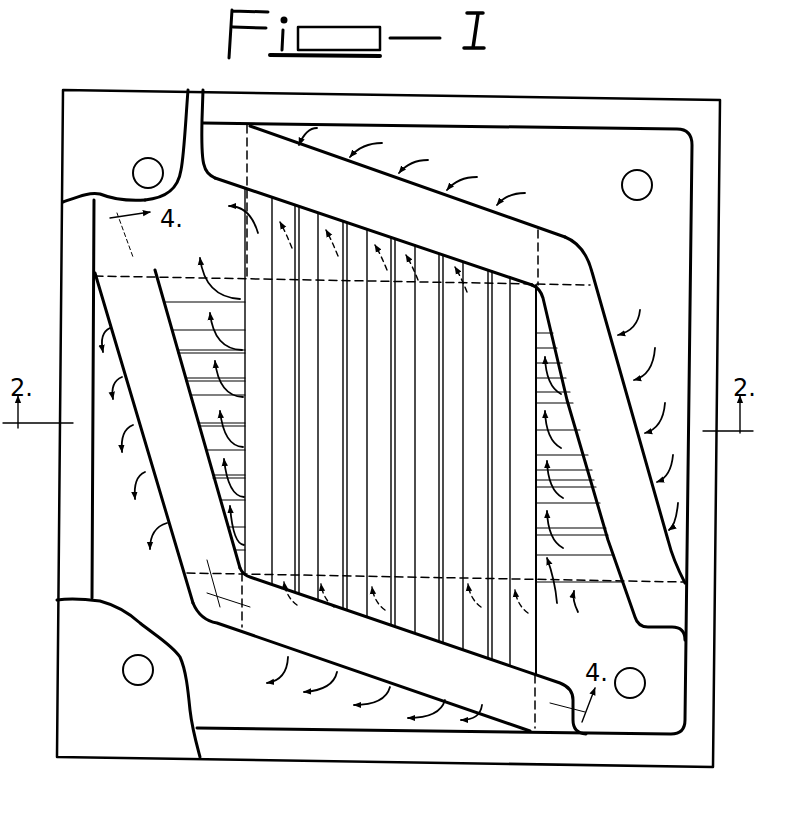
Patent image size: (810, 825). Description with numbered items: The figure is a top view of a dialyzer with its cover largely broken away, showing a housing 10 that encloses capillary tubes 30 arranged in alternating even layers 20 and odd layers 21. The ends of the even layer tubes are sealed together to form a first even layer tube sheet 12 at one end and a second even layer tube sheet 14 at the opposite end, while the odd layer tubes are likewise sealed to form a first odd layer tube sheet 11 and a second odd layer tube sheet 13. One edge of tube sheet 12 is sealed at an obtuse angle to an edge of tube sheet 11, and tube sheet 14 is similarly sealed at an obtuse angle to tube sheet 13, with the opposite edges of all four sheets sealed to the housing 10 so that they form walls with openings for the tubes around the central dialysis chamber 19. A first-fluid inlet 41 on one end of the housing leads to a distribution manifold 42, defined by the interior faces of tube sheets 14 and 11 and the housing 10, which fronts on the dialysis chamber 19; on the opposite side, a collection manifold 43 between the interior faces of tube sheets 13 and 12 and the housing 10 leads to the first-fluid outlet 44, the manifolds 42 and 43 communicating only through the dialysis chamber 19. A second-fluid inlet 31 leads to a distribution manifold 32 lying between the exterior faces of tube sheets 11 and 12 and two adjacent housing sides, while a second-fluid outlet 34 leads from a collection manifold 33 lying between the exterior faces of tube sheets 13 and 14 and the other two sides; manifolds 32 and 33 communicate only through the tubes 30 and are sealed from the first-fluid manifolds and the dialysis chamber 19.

The housing 10 is at (631, 98).
The first odd layer tube sheet 11 is at (615, 403).
The first even layer tube sheet 12 is at (432, 228).
The second odd layer tube sheet 13 is at (187, 410).
The second even layer tube sheet 14 is at (390, 660).
The dialysis chamber 19 is at (412, 411).
The even layers 20 is at (243, 262).
The odd layers 21 is at (595, 605).
The capillary tubes 30 is at (567, 422).
The second-fluid inlet 31 is at (633, 184).
The second-fluid distribution manifold 32 is at (663, 233).
The second-fluid collection manifold 33 is at (233, 710).
The second-fluid outlet 34 is at (130, 673).
The first-fluid inlet 41 is at (627, 692).
The first-fluid distribution manifold 42 is at (665, 658).
The first-fluid collection manifold 43 is at (190, 150).
The first-fluid outlet 44 is at (146, 178).